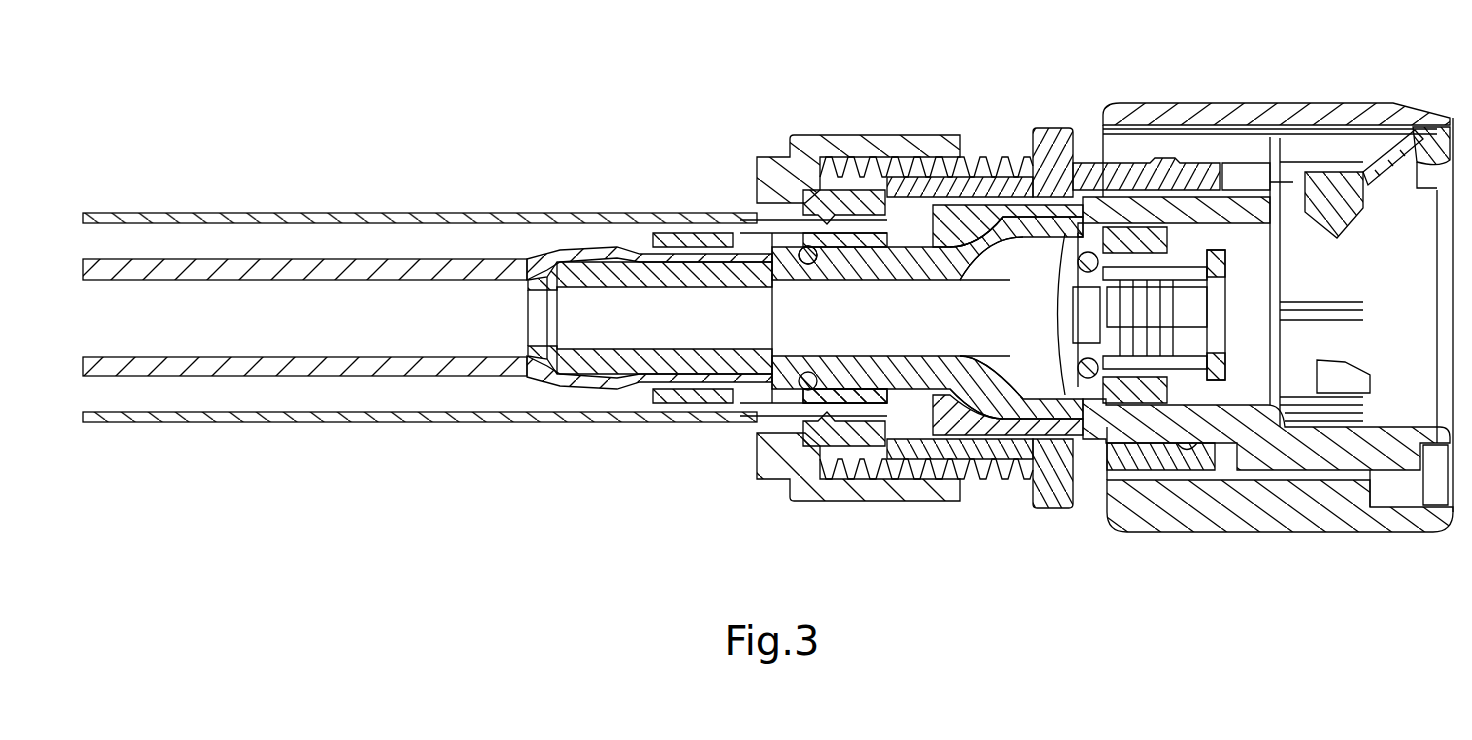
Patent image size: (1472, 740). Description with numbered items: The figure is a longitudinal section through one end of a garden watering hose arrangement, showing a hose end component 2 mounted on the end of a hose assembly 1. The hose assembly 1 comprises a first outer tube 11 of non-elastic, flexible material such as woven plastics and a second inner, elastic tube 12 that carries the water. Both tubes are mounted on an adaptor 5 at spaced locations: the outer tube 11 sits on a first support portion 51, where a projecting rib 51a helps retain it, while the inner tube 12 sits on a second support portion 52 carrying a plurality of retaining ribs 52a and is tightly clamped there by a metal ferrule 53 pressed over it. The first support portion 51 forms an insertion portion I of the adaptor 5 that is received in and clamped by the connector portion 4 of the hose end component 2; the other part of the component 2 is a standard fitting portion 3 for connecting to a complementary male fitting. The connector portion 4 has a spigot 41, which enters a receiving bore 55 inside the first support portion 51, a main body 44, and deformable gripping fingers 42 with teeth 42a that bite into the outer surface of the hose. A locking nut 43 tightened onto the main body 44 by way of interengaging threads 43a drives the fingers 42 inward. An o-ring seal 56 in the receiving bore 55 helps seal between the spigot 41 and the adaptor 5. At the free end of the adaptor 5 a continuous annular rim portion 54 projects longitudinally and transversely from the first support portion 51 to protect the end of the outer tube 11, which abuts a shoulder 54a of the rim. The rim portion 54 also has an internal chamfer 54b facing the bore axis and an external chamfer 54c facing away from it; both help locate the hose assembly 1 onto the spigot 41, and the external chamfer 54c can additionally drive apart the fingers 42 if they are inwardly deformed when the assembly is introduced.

The hose assembly 1 is at (427, 308).
The first outer tube 11 is at (332, 216).
The second inner elastic tube 12 is at (231, 372).
The hose end component 2 is at (988, 296).
The fitting portion 3 is at (1273, 113).
The connector portion 4 is at (986, 315).
The adaptor 5 is at (790, 235).
The insertion portion I is at (793, 233).
The spigot 41 is at (880, 267).
The deformable gripping fingers 42 is at (837, 197).
The teeth 42a is at (806, 476).
The locking nut 43 is at (795, 168).
The interengaging threads 43a is at (947, 467).
The main body 44 is at (1050, 137).
The first support portion 51 is at (827, 433).
The projecting rib 51a is at (860, 400).
The second support portion 52 is at (598, 358).
The retaining ribs 52a is at (655, 378).
The metal ferrule 53 is at (675, 238).
The rim portion 54 is at (1111, 380).
The shoulder 54a is at (933, 422).
The internal chamfer 54b is at (965, 352).
The external chamfer 54c is at (973, 437).
The receiving bore 55 is at (937, 257).
The o-ring seal 56 is at (760, 390).